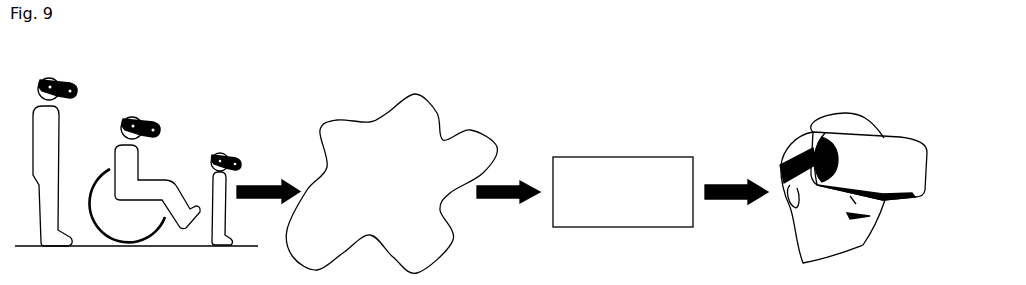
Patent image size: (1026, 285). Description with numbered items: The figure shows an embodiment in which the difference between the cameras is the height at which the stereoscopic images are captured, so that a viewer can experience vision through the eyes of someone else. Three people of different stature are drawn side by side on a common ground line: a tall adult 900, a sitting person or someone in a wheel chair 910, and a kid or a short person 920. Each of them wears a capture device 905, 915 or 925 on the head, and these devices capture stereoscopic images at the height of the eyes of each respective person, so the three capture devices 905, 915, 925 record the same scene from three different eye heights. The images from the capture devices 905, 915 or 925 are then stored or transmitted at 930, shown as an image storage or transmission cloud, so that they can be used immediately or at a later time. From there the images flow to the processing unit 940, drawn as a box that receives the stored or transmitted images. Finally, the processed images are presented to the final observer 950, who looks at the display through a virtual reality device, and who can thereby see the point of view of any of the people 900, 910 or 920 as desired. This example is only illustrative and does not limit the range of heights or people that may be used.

The tall adult 900 is at (52, 170).
The capture device 905 is at (59, 82).
The sitting person or someone in a wheel chair 910 is at (144, 189).
The capture device 915 is at (144, 120).
The kid or short person 920 is at (222, 207).
The capture device 925 is at (230, 157).
The image storage or transmission 930 is at (391, 183).
The processing unit 940 is at (623, 192).
The final observer 950 is at (853, 188).